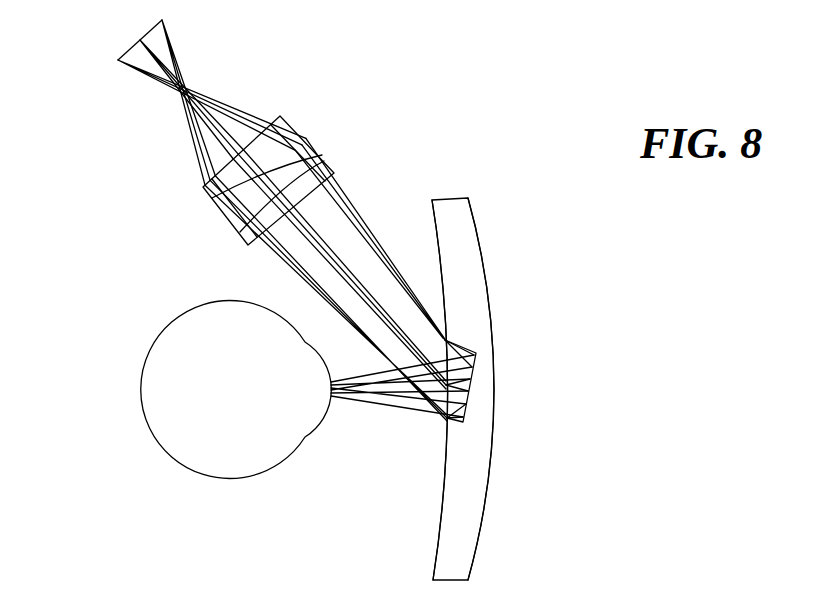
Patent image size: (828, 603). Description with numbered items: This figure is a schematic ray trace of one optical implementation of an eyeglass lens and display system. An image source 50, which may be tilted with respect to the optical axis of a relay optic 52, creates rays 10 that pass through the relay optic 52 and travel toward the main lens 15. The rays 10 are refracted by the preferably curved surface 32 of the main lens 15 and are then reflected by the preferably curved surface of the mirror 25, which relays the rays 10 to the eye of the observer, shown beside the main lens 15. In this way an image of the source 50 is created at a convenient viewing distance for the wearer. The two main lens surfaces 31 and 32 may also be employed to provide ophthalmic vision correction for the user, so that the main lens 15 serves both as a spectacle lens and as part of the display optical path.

The rays 10 is at (318, 238).
The main lens 15 is at (455, 212).
The mirror 25 is at (468, 404).
The main lens surface 31 is at (481, 538).
The curved surface of main lens 32 is at (439, 541).
The image source 50 is at (125, 52).
The relay optic 52 is at (329, 168).